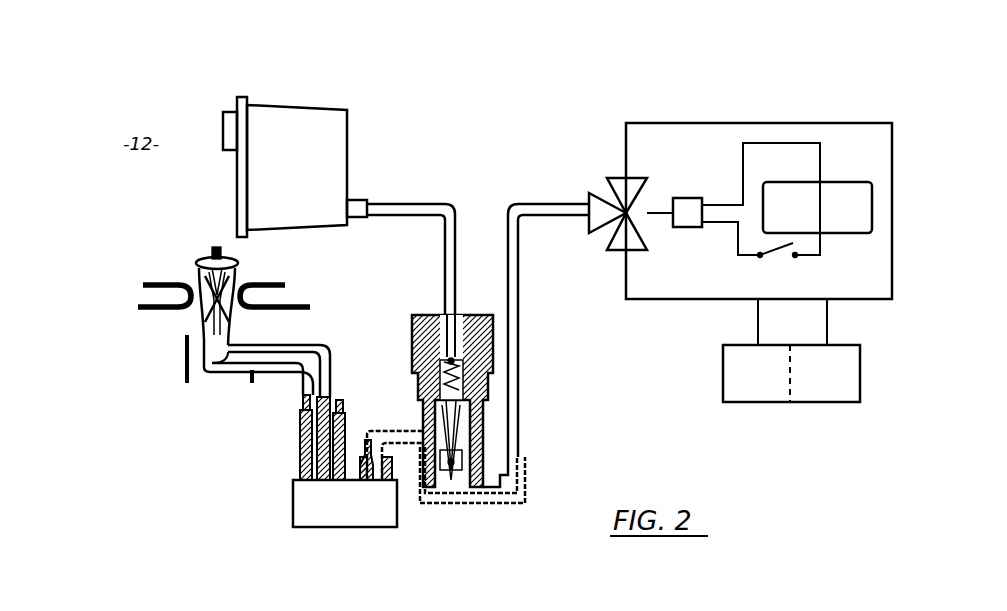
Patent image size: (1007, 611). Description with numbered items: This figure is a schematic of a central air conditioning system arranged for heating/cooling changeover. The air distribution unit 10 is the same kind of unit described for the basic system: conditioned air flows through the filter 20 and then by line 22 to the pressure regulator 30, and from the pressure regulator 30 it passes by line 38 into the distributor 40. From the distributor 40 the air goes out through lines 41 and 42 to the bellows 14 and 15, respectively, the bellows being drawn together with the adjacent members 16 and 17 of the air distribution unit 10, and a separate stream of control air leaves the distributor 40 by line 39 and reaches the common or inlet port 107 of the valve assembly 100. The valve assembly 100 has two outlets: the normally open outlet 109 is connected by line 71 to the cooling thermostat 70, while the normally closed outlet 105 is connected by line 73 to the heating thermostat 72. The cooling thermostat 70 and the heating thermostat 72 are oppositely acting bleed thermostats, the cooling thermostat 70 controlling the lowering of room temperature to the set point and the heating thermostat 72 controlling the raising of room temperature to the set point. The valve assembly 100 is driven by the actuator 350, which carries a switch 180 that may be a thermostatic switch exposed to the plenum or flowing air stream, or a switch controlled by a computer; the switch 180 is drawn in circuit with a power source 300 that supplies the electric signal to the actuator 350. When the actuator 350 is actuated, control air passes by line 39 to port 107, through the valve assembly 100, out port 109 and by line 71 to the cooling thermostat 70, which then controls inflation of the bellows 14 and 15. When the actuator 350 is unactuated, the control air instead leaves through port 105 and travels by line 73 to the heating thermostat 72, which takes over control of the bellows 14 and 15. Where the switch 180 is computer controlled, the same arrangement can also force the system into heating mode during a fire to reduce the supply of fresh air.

The air distribution unit 10 is at (234, 487).
The bellows 14 is at (190, 327).
The bellows 15 is at (237, 323).
The left mounting tube 16 is at (163, 282).
The right mounting tube 17 is at (267, 282).
The filter 20 is at (330, 108).
The line 22 is at (385, 204).
The pressure regulator 30 is at (472, 313).
The line 38 is at (405, 453).
The line 39 is at (520, 434).
The distributor 40 is at (326, 528).
The line 41 is at (283, 377).
The line 42 is at (320, 345).
The cooling thermostat 70 is at (835, 403).
The line 71 is at (830, 122).
The heating thermostat 72 is at (753, 403).
The line 73 is at (685, 300).
The valve assembly 100 is at (596, 199).
The normally closed outlet 105 is at (617, 252).
The common or inlet port 107 is at (587, 203).
The normally open outlet 109 is at (667, 168).
The switch 180 is at (783, 258).
The power source 300 is at (847, 236).
The actuator 350 is at (695, 198).